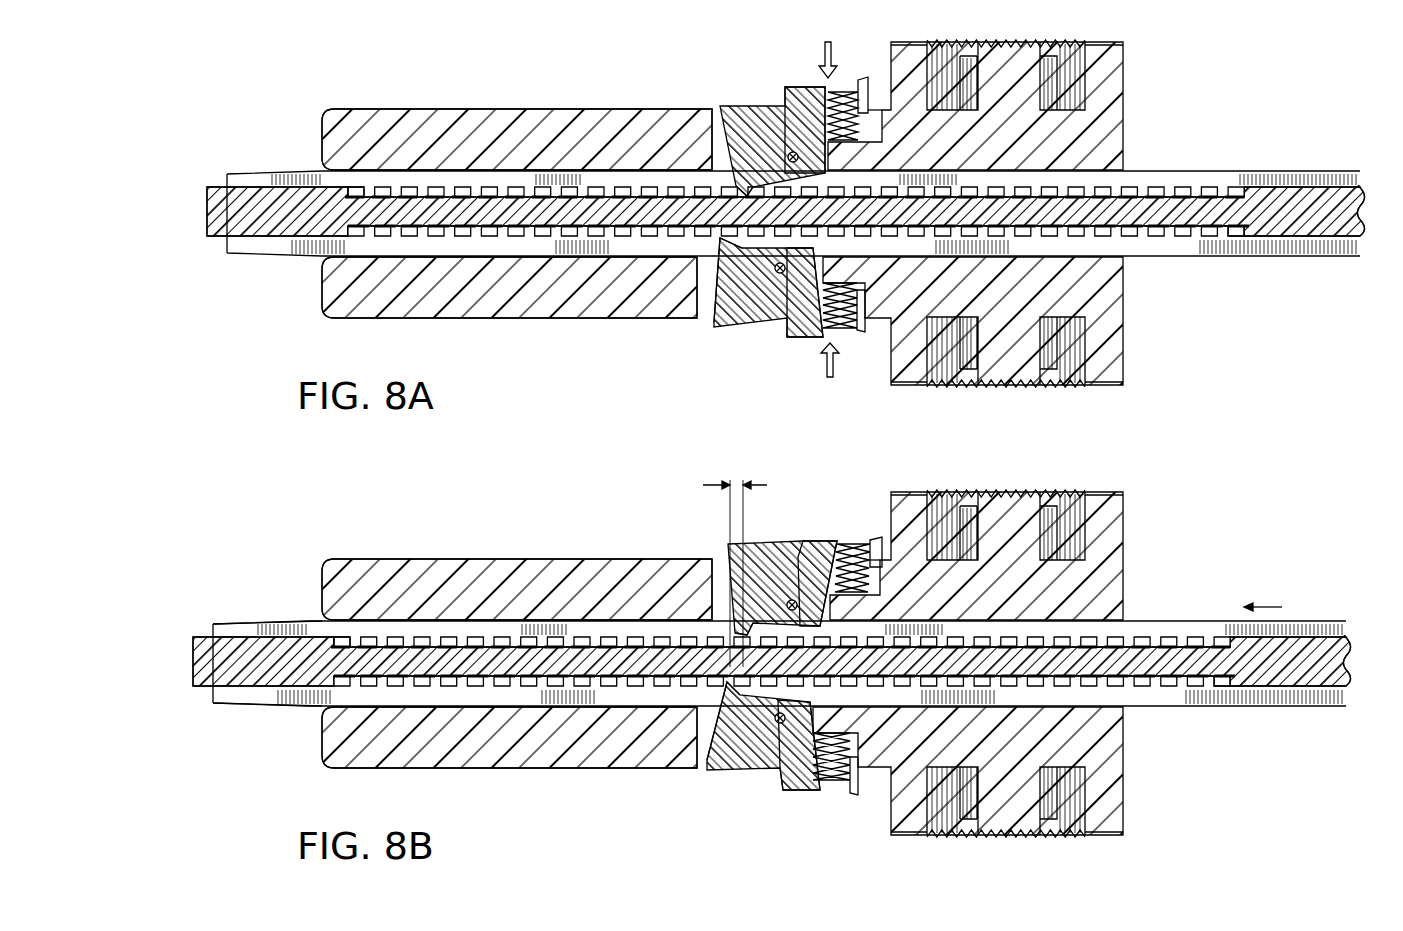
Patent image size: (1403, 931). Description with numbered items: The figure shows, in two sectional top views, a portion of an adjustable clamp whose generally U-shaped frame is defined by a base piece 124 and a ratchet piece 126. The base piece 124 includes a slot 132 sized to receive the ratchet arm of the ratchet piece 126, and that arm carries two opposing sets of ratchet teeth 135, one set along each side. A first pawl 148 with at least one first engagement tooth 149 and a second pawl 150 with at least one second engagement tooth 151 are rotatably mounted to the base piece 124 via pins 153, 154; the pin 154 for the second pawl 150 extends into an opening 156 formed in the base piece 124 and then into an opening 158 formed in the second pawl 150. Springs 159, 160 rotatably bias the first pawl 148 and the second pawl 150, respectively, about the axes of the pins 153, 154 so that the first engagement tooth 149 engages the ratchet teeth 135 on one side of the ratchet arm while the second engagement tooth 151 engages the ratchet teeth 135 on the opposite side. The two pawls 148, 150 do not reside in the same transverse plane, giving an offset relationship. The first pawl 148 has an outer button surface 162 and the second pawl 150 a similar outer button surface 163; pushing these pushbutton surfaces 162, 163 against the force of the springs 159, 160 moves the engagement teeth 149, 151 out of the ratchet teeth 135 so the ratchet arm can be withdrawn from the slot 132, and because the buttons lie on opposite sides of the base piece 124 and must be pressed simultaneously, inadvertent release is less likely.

In FIG. 8A, the base piece 124 is at (350, 104).
In FIG. 8B, the base piece 124 is at (504, 638).
In FIG. 8A, the ratchet piece 126 is at (1298, 164).
In FIG. 8B, the ratchet piece 126 is at (772, 627).
In FIG. 8A, the slot 132 is at (1112, 171).
In FIG. 8B, the slot 132 is at (779, 645).
In FIG. 8A, the ratchet teeth 135 is at (463, 186).
In FIG. 8B, the ratchet teeth 135 is at (783, 635).
In FIG. 8A, the first pawl 148 is at (727, 340).
In FIG. 8B, the first pawl 148 is at (751, 756).
In FIG. 8A, the first engagement tooth 149 is at (720, 238).
In FIG. 8B, the first engagement tooth 149 is at (691, 743).
In FIG. 8A, the second pawl 150 is at (730, 95).
In FIG. 8B, the second pawl 150 is at (757, 562).
In FIG. 8A, the second engagement tooth 151 is at (735, 186).
In FIG. 8B, the second engagement tooth 151 is at (695, 577).
In FIG. 8A, the pin 153 is at (778, 273).
In FIG. 8B, the pin 153 is at (751, 737).
In FIG. 8A, the pin 154 is at (788, 158).
In FIG. 8B, the pin 154 is at (775, 585).
In FIG. 8A, the opening 156 is at (777, 315).
In FIG. 8B, the opening 156 is at (782, 761).
In FIG. 8A, the opening 158 is at (787, 150).
In FIG. 8B, the opening 158 is at (797, 567).
In FIG. 8A, the spring 159 is at (865, 293).
In FIG. 8B, the spring 159 is at (870, 752).
In FIG. 8A, the spring 160 is at (860, 140).
In FIG. 8B, the spring 160 is at (887, 576).
In FIG. 8A, the outer button surface 162 is at (817, 340).
In FIG. 8B, the outer button surface 162 is at (827, 802).
In FIG. 8A, the outer button surface 163 is at (820, 86).
In FIG. 8B, the outer button surface 163 is at (849, 527).